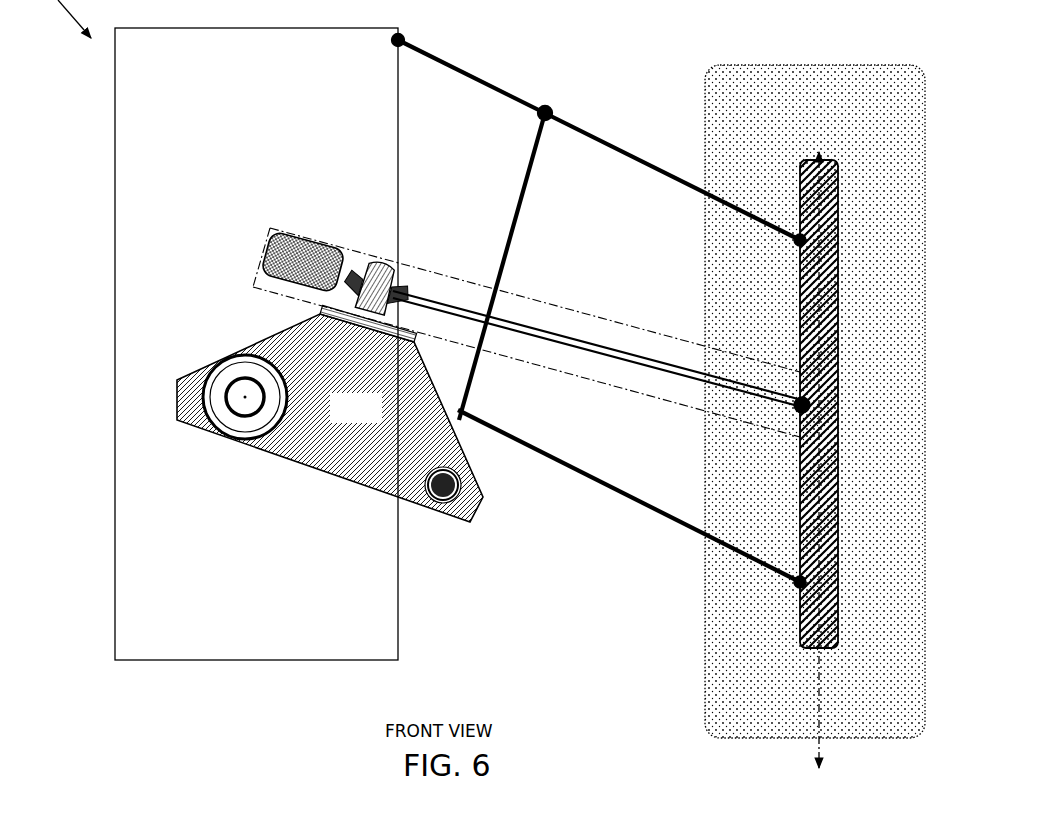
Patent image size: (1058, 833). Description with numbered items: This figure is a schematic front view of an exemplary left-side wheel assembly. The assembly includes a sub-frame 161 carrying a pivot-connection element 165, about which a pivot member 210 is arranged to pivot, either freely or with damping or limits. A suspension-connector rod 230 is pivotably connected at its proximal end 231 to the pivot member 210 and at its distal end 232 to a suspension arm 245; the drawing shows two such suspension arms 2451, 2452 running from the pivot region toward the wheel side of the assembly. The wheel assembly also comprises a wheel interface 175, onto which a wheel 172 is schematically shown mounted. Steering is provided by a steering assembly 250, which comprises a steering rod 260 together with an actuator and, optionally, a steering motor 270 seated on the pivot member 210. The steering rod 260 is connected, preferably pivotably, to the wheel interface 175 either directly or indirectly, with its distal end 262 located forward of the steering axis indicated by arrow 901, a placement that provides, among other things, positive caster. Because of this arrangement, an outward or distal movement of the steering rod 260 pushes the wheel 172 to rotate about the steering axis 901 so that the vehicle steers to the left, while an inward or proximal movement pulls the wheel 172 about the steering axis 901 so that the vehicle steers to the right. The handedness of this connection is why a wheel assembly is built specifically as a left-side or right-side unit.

The sub-frame 161 is at (344, 105).
The pivot-connection element 165 is at (243, 408).
The wheel 172 is at (865, 121).
The wheel interface 175 is at (799, 618).
The pivot member 210 is at (377, 420).
The suspension-connector rod 230 is at (515, 250).
The proximal end 231 is at (434, 506).
The distal end 232 is at (560, 108).
The suspension arm 245 is at (599, 311).
The suspension arm 2451 is at (654, 160).
The suspension arm 2452 is at (599, 477).
The steering assembly 250 is at (530, 370).
The steering rod 260 is at (601, 342).
The distal end 262 is at (789, 408).
The steering motor 270 is at (306, 238).
The steering axis 901 is at (812, 742).